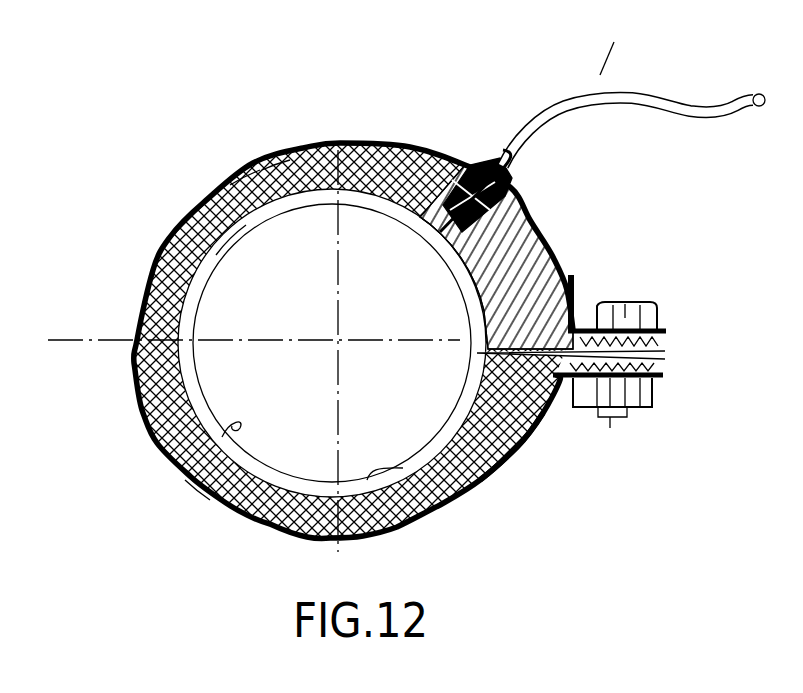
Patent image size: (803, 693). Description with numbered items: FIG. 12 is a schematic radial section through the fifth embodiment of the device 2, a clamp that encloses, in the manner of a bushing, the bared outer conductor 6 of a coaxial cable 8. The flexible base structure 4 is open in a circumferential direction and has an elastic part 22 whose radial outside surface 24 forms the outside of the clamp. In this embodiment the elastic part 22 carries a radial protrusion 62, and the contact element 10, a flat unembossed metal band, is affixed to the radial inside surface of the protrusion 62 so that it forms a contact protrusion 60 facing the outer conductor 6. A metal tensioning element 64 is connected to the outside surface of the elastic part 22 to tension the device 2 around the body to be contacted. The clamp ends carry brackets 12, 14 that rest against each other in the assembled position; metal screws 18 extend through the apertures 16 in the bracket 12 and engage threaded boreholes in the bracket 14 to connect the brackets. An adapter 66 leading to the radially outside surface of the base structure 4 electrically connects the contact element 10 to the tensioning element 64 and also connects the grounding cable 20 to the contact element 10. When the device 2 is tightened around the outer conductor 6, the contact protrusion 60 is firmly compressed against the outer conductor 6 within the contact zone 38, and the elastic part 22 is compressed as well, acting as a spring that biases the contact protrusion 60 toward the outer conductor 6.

The device 2 is at (583, 210).
The base structure 4 is at (572, 278).
The outer conductor 6 is at (372, 527).
The coaxial cable 8 is at (375, 394).
The contact element 10 is at (377, 207).
The bracket 12 is at (662, 323).
The bracket 14 is at (660, 380).
The apertures 16 is at (662, 352).
The metal screws 18 is at (640, 302).
The grounding cable 20 is at (663, 95).
The elastic part 22 is at (495, 468).
The radial outside surface 24 is at (455, 502).
The contact zone 38 is at (205, 493).
The contact protrusion 60 is at (237, 255).
The radial protrusion 62 is at (273, 157).
The tensioning element 64 is at (243, 180).
The adapter 66 is at (492, 157).